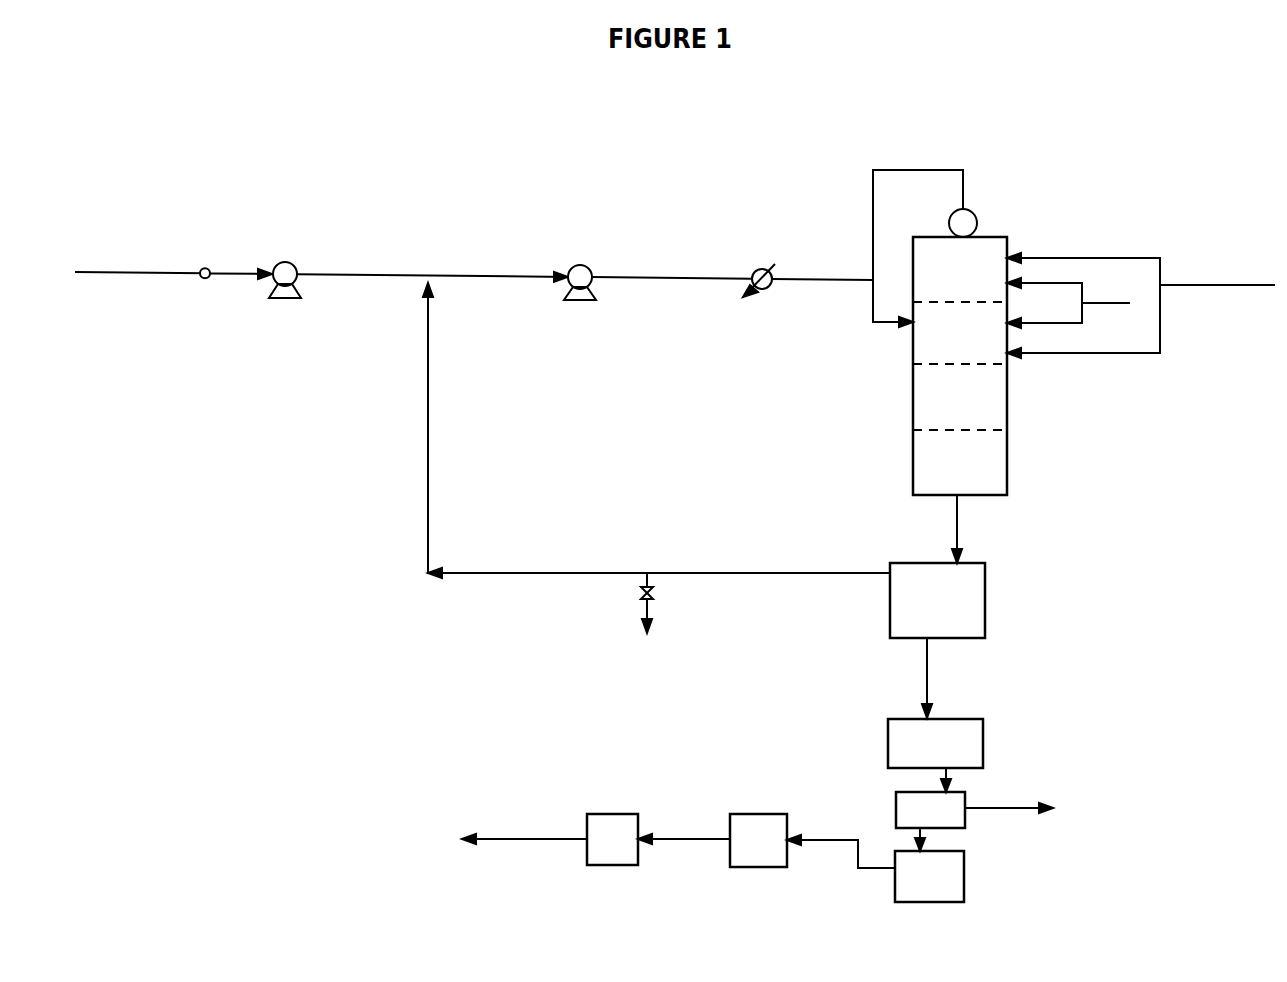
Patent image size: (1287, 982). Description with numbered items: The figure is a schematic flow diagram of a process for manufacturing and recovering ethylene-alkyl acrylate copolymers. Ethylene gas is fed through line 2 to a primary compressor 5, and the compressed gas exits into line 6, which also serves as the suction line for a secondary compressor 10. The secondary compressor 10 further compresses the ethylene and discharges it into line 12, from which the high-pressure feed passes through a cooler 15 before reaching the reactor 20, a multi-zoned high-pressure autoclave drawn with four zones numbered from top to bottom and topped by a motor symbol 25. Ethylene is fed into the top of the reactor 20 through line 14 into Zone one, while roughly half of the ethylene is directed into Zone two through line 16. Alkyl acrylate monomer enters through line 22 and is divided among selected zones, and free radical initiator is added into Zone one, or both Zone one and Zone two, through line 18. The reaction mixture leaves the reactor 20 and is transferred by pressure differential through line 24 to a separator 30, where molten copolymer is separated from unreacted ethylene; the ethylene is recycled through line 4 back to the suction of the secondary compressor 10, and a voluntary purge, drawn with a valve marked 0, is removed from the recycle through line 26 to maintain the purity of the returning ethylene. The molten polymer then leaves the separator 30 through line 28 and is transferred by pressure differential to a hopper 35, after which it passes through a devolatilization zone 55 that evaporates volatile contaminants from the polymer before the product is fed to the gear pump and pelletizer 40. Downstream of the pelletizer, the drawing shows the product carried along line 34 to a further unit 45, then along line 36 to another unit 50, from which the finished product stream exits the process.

The line 2 is at (93, 270).
The line 4 is at (430, 440).
The primary compressor 5 is at (291, 260).
The line 6 is at (485, 273).
The secondary compressor 10 is at (585, 263).
The line 12 is at (823, 279).
The line 14 is at (893, 169).
The cooler 15 is at (763, 289).
The line 16 is at (869, 305).
The line 18 is at (1107, 303).
The reactor 20 is at (1007, 237).
The line 22 is at (1212, 286).
The line 24 is at (957, 528).
The motor 25 is at (972, 212).
The line 26 is at (650, 609).
The valve indicator 0 is at (642, 594).
The line 28 is at (929, 673).
The separator 30 is at (985, 604).
The line 34 is at (823, 838).
The hopper 35 is at (983, 745).
The line 36 is at (672, 838).
The gear pump and pelletizer 40 is at (964, 876).
The unit 45 is at (755, 867).
The unit 50 is at (615, 865).
The DV zone 55 is at (965, 824).